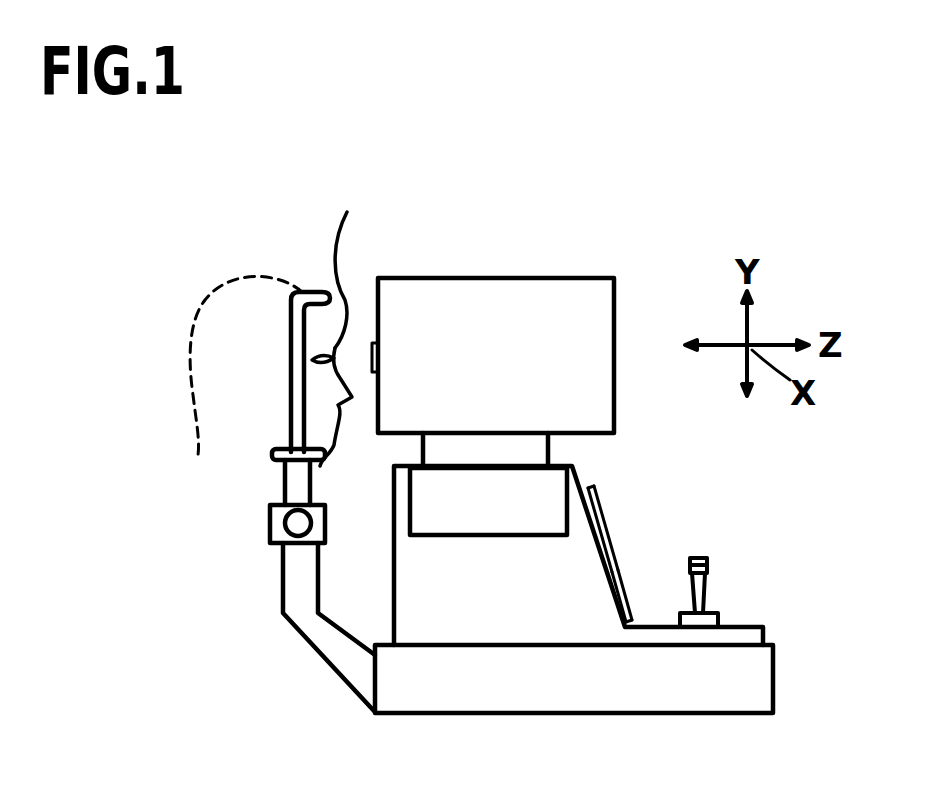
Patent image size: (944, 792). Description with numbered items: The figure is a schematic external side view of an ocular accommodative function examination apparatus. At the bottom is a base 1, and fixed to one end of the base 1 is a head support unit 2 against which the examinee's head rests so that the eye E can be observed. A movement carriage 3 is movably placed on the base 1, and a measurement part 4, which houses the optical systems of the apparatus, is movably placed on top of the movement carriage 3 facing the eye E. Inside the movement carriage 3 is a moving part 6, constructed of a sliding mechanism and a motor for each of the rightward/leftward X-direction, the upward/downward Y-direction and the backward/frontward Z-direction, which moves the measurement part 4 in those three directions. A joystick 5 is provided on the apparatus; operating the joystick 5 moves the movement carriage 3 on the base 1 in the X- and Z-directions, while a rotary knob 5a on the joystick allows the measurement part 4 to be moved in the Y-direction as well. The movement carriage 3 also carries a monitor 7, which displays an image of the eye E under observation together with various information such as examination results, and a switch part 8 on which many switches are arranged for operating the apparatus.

The base 1 is at (720, 676).
The head support unit 2 is at (226, 538).
The movement carriage 3 is at (452, 615).
The measurement part 4 is at (467, 300).
The joystick 5 is at (710, 563).
The rotary knob 5a is at (710, 577).
The moving part 6 is at (502, 512).
The monitor 7 is at (598, 500).
The switch part 8 is at (630, 600).
The eye E is at (279, 316).